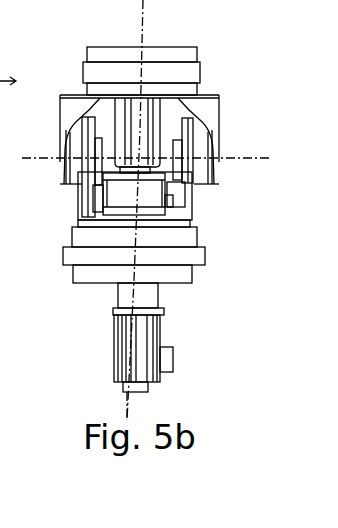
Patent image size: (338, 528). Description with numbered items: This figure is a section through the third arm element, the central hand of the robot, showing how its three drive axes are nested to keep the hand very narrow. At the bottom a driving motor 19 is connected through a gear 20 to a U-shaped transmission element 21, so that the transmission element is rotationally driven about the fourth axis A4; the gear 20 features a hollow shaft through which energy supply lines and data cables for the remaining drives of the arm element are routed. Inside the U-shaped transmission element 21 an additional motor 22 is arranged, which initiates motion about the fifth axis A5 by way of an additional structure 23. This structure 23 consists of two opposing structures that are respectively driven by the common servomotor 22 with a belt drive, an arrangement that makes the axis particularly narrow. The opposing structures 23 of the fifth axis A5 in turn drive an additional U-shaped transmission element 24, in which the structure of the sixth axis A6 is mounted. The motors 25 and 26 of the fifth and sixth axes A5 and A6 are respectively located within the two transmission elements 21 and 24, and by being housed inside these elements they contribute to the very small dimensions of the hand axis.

The driving motor 19 is at (160, 333).
The gear 20 is at (205, 254).
The U-shaped transmission element 21 is at (190, 203).
The additional motor 22 is at (80, 212).
The additional structure 23 is at (82, 176).
The additional U-shaped transmission element 24 is at (219, 118).
The motor of the fifth axis 25 is at (113, 180).
The motor of the sixth axis 26 is at (137, 118).
The fourth axis A4 is at (126, 406).
The fifth axis A5 is at (147, 150).
The sixth axis A6 is at (143, 18).